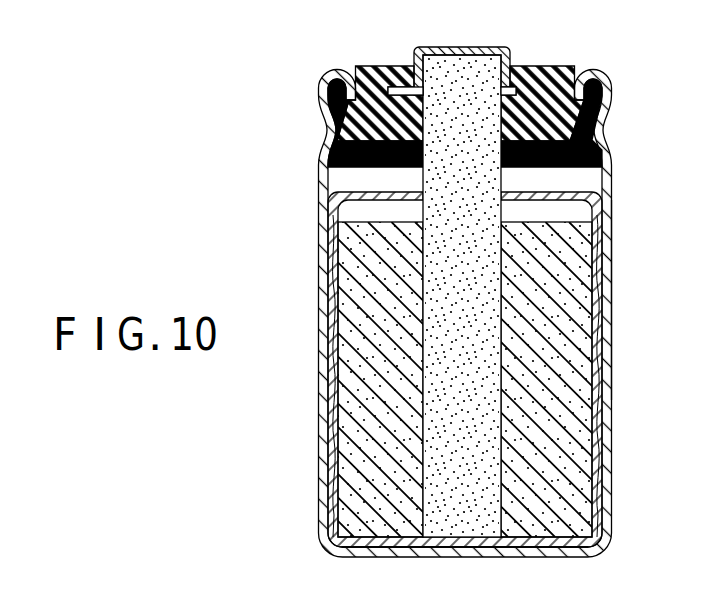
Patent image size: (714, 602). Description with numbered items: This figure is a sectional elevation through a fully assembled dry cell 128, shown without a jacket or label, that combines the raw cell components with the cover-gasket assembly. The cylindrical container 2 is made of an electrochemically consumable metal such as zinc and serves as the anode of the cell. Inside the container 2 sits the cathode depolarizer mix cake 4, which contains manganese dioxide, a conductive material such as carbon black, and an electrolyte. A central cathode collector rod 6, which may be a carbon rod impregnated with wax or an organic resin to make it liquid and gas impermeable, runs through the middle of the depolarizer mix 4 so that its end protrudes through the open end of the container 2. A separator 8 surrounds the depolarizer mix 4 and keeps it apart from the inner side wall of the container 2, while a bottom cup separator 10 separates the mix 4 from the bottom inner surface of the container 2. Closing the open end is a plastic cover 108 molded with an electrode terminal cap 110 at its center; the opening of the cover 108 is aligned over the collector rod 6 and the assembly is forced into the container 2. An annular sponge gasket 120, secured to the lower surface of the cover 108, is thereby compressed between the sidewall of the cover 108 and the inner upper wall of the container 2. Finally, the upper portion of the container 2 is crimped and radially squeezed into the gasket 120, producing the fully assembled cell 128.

The cylindrical container 2 is at (607, 213).
The cathode depolarizer mix cake 4 is at (583, 251).
The cathode collector rod 6 is at (452, 68).
The separator 8 is at (570, 190).
The bottom cup separator 10 is at (590, 533).
The plastic closure or cover 108 is at (522, 72).
The electrode terminal cap 110 is at (425, 50).
The annular sponge gasket 120 is at (595, 82).
The fully assembled cell 128 is at (620, 286).